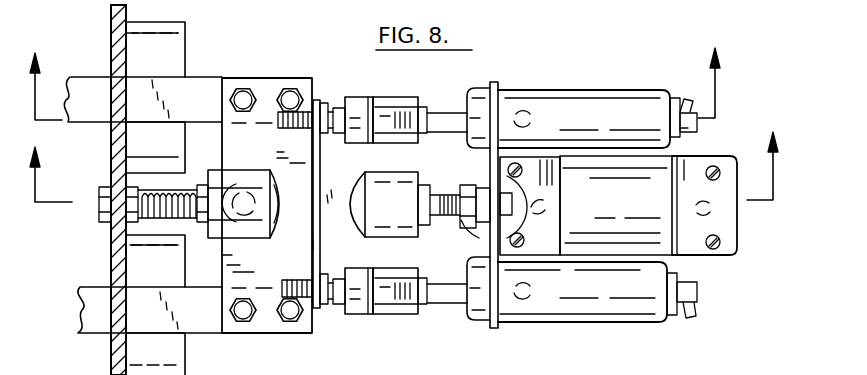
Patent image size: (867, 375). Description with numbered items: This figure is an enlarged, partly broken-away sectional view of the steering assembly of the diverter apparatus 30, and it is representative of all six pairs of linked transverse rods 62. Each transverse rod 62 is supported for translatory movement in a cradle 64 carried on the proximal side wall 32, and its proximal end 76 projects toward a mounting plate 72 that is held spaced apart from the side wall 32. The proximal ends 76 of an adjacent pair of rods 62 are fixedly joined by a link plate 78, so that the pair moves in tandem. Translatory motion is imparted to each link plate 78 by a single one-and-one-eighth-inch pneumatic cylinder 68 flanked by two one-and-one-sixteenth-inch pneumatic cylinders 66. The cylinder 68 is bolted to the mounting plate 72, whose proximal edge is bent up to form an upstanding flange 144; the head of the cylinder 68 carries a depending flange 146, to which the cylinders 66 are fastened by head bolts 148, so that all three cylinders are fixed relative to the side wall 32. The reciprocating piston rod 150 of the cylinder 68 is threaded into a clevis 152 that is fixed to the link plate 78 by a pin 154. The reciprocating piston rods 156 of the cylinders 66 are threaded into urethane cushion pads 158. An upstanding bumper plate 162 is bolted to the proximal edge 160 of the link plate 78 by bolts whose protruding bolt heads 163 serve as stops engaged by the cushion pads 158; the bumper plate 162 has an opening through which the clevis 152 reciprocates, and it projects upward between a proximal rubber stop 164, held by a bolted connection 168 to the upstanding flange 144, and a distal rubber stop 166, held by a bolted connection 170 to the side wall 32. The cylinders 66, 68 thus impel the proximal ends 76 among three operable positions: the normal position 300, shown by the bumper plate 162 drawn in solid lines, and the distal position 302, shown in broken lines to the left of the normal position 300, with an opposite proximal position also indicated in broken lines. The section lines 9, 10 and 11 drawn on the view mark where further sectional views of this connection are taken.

The section line 9- 9 is at (404, 167).
The section line 10- 10 is at (378, 73).
The section line 11- 11 is at (214, 369).
The diverter apparatus 30 is at (279, 52).
The proximal side wall 32 is at (111, 18).
The transverse rod 62 is at (78, 85).
The cradle 64 is at (175, 47).
The 1 1/16-inch pneumatic actuator 66 is at (612, 92).
The 1 1/8-inch pneumatic actuator 68 is at (660, 213).
The mounting plate 72 is at (520, 212).
The proximal end 76 is at (213, 78).
The link plate 78 is at (230, 256).
The upstanding flange 144 is at (490, 165).
The depending flange 146 is at (495, 328).
The head bolt 148 is at (480, 90).
The reciprocating piston rod 150 is at (453, 218).
The clevis 152 is at (338, 185).
The pin 154 is at (263, 167).
The reciprocating piston rod 156 is at (448, 113).
The urethane cushion pad 158 is at (375, 97).
The proximal edge 160 is at (315, 97).
The upstanding bumper plate 162 is at (319, 243).
The protruding bolt head 163 is at (357, 100).
The proximal rubber stop 164 is at (410, 172).
The distal rubber stop 166 is at (253, 238).
The bolted connection 168 is at (518, 165).
The bolted connection 170 is at (98, 222).
The normal position 300 is at (323, 370).
The distal position 302 is at (277, 370).